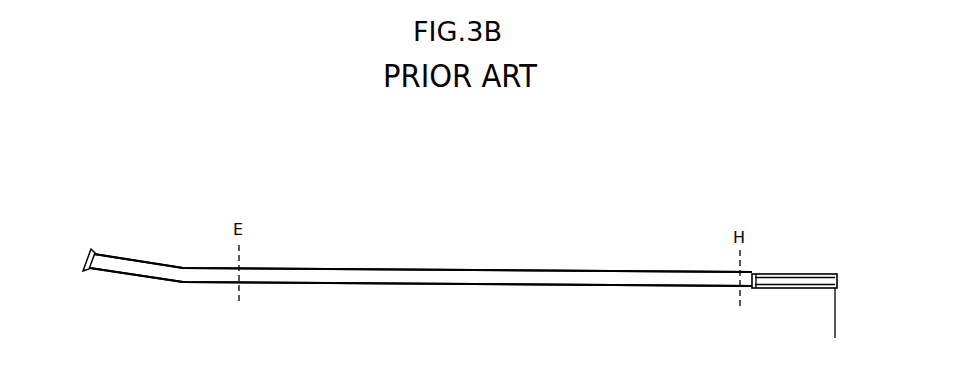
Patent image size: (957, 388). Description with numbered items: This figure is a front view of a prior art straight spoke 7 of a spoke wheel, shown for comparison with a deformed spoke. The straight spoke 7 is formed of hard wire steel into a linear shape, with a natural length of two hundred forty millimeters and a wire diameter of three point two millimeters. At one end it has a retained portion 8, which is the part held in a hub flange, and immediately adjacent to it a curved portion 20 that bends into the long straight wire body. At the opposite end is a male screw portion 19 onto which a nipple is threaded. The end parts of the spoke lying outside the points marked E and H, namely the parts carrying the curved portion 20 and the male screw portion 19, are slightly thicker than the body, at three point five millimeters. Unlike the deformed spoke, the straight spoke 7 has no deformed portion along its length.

The straight spoke 7 is at (293, 231).
The retained portion 8 is at (87, 259).
The male screw portion 19 is at (797, 273).
The curved portion 20 is at (118, 258).